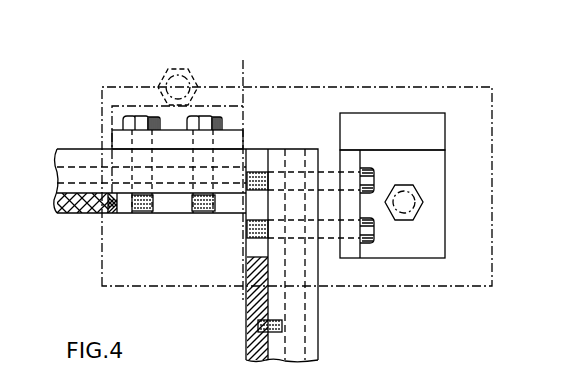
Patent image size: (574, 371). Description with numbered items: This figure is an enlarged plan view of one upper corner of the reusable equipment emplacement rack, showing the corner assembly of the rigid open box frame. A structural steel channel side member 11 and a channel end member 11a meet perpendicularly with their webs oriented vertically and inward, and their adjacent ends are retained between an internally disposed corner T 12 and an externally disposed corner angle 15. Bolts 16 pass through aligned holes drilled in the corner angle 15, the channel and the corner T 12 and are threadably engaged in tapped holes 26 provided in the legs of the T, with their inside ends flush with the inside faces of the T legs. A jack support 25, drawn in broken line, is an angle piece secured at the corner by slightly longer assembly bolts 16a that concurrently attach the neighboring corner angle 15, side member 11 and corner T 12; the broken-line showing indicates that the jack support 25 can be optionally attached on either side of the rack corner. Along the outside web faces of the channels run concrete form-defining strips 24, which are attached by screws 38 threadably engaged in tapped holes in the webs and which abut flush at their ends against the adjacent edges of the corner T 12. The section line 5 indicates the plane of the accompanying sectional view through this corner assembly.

The jack support 25 is at (124, 98).
The end member 11a is at (86, 153).
The side member 11 is at (312, 330).
The corner T 12 is at (258, 212).
The corner angle 15 is at (305, 138).
The bolt 16 is at (165, 118).
The assembly bolt 16a is at (363, 218).
The concrete form-defining strip 24 is at (82, 216).
The tapped hole 26 is at (258, 168).
The screw 38 is at (255, 323).
The section line 5- 5 is at (51, 248).